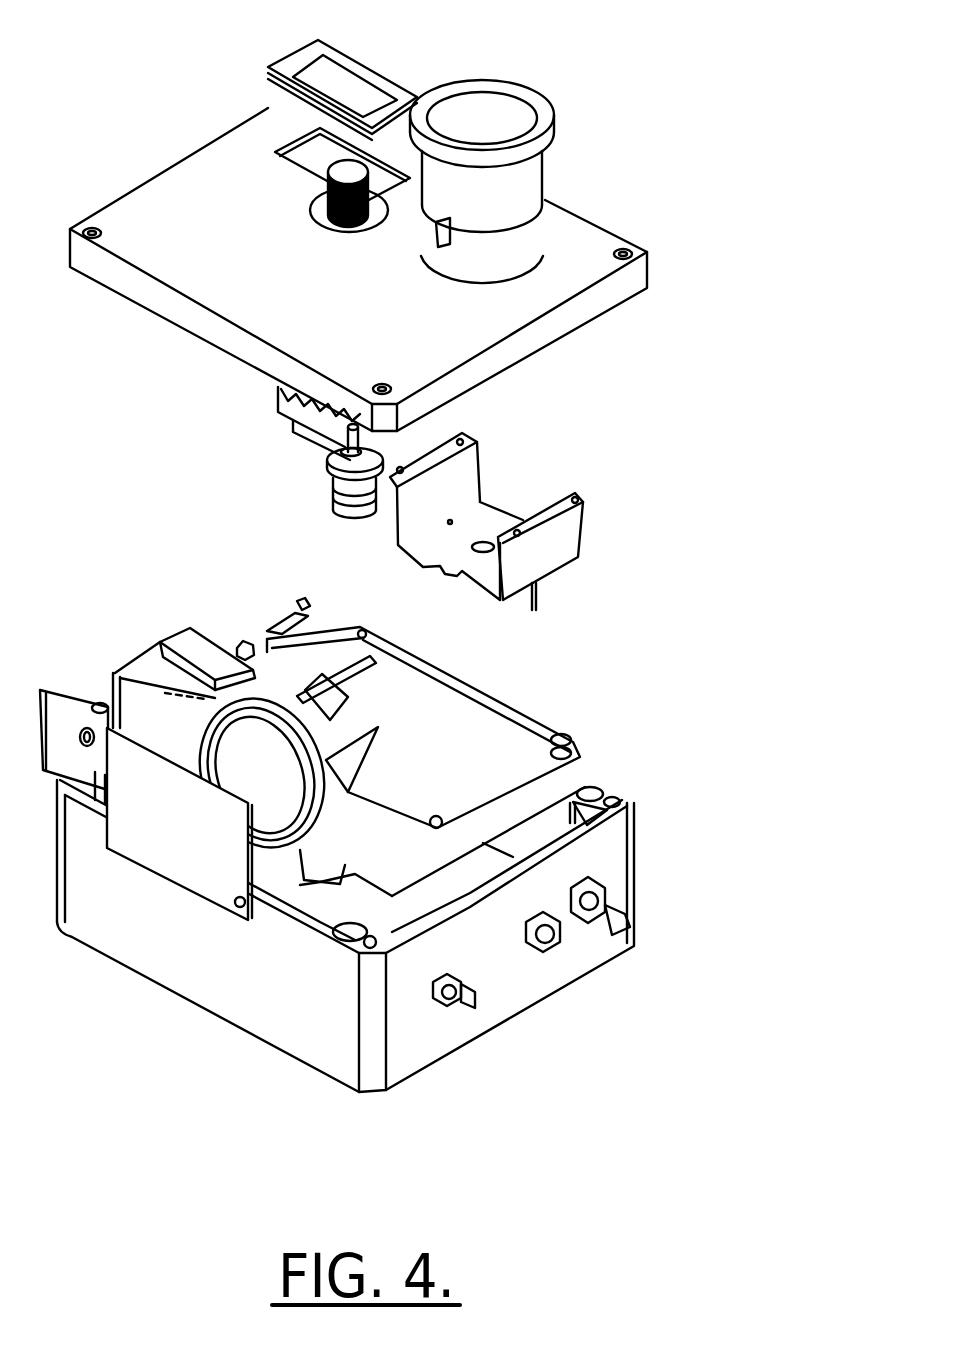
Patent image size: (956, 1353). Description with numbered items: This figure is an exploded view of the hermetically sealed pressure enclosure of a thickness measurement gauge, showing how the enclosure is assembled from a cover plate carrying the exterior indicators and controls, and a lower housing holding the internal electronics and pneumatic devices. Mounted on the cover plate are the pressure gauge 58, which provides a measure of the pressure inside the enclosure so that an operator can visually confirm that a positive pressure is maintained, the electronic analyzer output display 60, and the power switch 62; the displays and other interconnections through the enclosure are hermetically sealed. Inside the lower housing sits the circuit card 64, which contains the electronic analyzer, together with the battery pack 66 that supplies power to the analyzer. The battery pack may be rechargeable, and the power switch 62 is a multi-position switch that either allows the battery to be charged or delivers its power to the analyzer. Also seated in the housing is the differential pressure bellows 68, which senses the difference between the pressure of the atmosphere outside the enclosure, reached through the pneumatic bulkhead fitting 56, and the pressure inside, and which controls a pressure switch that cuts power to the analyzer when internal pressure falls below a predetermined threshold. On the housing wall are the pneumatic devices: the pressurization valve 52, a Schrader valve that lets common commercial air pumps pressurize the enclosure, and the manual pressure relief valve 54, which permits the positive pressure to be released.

The pressurization valve 52 is at (640, 876).
The manual pressure relief valve 54 is at (560, 979).
The pneumatic bulkhead fitting 56 is at (438, 1043).
The pressure gauge 58 is at (515, 166).
The electronic analyzer output display 60 is at (365, 70).
The power switch 62 is at (322, 216).
The circuit card 64 is at (442, 713).
The battery pack 66 is at (180, 632).
The differential pressure bellows 68 is at (262, 888).